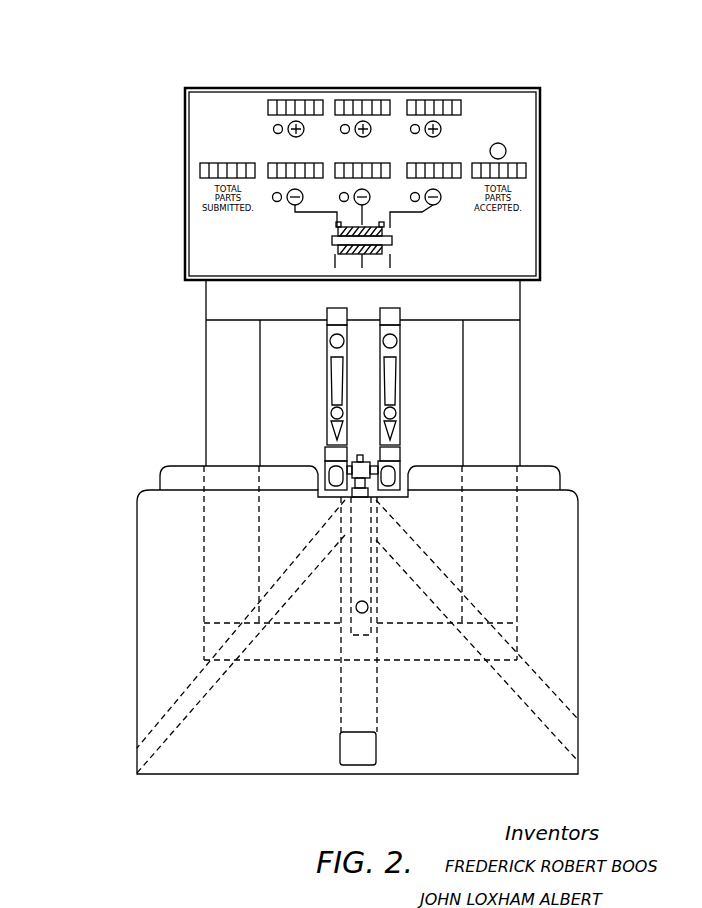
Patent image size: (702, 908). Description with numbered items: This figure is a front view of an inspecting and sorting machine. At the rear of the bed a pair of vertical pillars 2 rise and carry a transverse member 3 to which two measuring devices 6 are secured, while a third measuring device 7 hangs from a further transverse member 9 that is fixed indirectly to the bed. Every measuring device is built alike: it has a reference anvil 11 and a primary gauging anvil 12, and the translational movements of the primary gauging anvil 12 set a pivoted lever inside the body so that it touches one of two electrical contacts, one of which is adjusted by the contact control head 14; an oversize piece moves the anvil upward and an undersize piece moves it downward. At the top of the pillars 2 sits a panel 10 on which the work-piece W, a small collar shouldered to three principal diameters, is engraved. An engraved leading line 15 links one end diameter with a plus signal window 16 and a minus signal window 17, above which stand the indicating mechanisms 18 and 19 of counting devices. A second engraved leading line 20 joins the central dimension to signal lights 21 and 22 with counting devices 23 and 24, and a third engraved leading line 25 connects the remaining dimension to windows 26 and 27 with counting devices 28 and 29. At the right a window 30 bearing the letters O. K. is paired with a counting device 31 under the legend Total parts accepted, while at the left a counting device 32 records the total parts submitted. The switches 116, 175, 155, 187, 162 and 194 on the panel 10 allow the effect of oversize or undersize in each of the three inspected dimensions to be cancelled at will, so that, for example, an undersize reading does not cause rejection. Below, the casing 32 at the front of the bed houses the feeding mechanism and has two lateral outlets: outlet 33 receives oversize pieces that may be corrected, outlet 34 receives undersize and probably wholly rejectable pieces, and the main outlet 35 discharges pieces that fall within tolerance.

The vertical pillars 2 is at (206, 390).
The transverse member 3 is at (520, 303).
The measuring devices 6 is at (327, 358).
The third measuring device 7 is at (362, 537).
The further transverse member 9 is at (513, 637).
The panel 10 is at (532, 190).
The reference anvil 11 is at (328, 482).
The primary gauging anvil 12 is at (327, 452).
The contact control head 14 is at (330, 342).
The engraved leading line 15 is at (420, 213).
The signal window 16 is at (488, 100).
The signal window 17 is at (436, 204).
The indicating mechanism of counting device 18 is at (440, 100).
The indicating mechanism of counting device 19 is at (438, 163).
The engraved leading line 20 is at (330, 224).
The signal light 21 is at (371, 128).
The signal light 22 is at (366, 212).
The counting device 23 is at (368, 100).
The counting device 24 is at (338, 163).
The engraved leading line 25 is at (297, 212).
The window 26 is at (274, 134).
The window 27 is at (295, 207).
The counting device 28 is at (270, 100).
The counting device 29 is at (205, 160).
The window 30 is at (505, 146).
The counting device 31 is at (527, 170).
The counting device / casing 32 is at (200, 170).
The lateral outlet 33 is at (137, 744).
The lateral outlet 34 is at (576, 716).
The main outlet 35 is at (352, 778).
The switch 116 is at (277, 203).
The switch 155 is at (341, 193).
The switch 162 is at (418, 203).
The switch 175 is at (278, 124).
The switch 187 is at (345, 124).
The switch 194 is at (415, 124).
The work-piece W is at (376, 252).